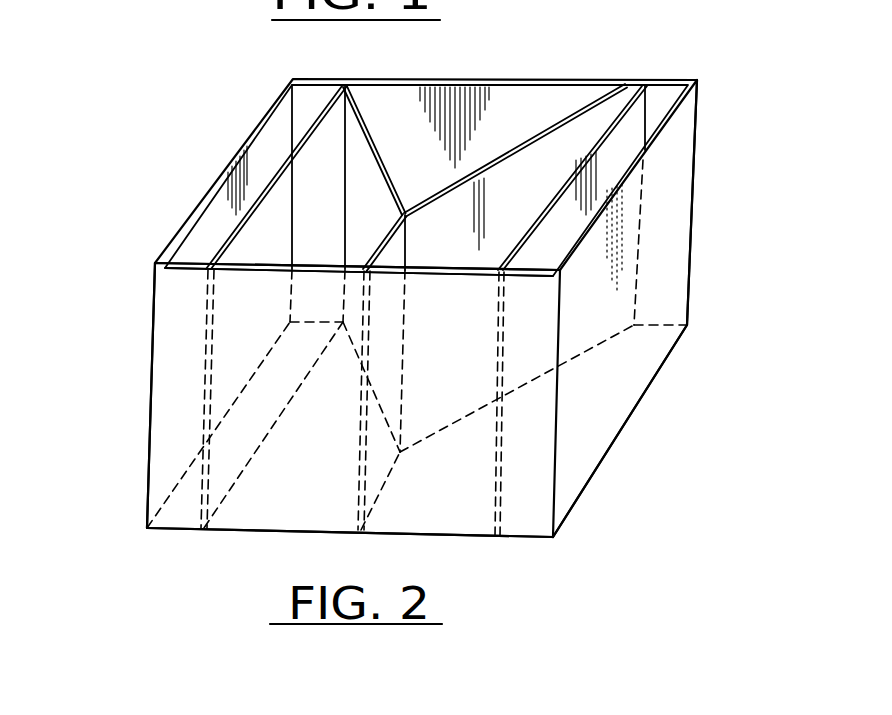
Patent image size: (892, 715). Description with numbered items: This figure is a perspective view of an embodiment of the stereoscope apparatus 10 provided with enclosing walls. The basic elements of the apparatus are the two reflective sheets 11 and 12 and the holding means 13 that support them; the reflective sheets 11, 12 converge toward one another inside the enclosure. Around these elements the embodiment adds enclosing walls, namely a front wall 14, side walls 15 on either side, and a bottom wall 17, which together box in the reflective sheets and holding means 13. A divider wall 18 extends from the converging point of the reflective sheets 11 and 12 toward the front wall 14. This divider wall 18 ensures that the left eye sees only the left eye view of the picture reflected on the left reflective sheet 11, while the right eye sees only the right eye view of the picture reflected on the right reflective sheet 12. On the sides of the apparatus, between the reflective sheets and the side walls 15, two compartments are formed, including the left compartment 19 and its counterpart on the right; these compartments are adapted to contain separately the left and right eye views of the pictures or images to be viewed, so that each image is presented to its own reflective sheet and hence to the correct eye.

The container 10 is at (540, 100).
The reflective sheet 11 is at (360, 168).
The reflective sheet 12 is at (577, 150).
The holding means 13 is at (288, 207).
The front wall 14 is at (458, 512).
The side wall 15 is at (152, 316).
The bottom wall 17 is at (225, 528).
The divider wall 18 is at (380, 342).
The left compartment 19 is at (215, 230).